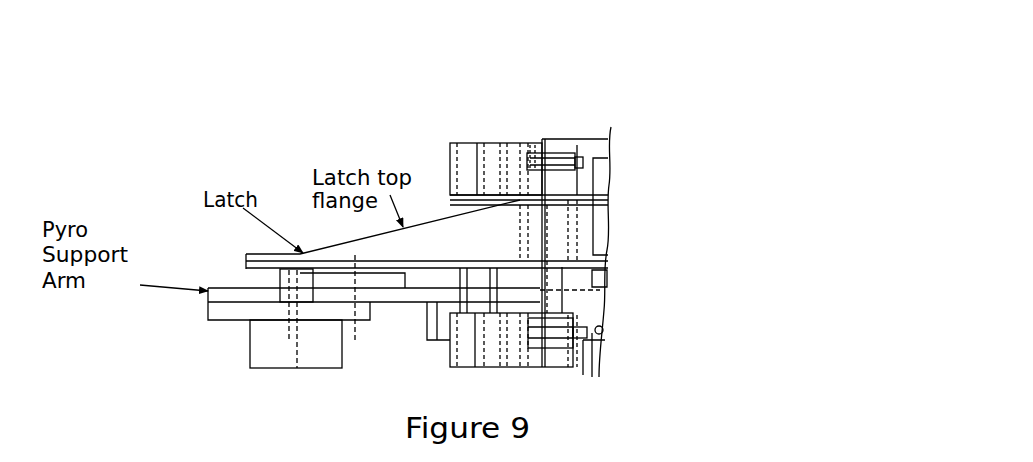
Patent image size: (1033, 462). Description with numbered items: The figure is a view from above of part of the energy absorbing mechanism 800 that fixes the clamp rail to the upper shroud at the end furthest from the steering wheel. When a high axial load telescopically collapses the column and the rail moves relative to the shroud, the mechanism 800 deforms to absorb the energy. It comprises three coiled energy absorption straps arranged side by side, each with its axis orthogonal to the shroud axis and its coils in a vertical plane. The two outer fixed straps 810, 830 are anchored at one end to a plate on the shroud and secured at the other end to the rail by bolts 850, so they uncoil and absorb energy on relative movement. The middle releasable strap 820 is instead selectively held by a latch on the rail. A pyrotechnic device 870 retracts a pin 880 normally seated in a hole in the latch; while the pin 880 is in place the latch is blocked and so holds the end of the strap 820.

The energy absorbing mechanism 800 is at (310, 147).
The fixed energy absorption strap 810 is at (448, 158).
The releasable energy absorption strap 820 is at (563, 240).
The fixed energy absorption strap 830 is at (570, 349).
The bolt 850 is at (564, 153).
The pyrotechnic device 870 is at (250, 354).
The pin 880 is at (275, 278).